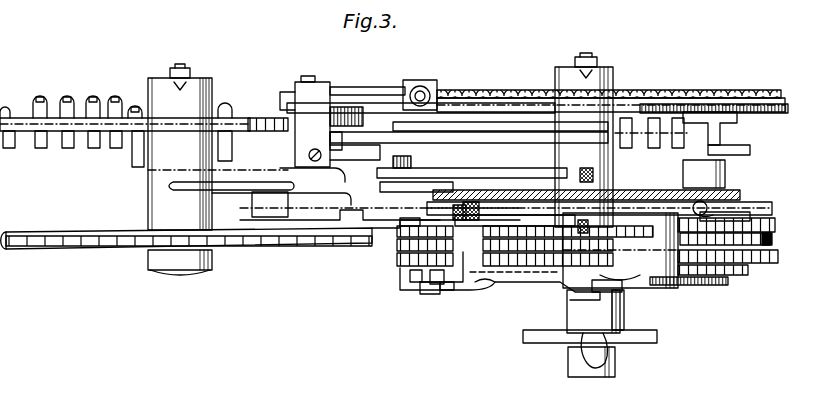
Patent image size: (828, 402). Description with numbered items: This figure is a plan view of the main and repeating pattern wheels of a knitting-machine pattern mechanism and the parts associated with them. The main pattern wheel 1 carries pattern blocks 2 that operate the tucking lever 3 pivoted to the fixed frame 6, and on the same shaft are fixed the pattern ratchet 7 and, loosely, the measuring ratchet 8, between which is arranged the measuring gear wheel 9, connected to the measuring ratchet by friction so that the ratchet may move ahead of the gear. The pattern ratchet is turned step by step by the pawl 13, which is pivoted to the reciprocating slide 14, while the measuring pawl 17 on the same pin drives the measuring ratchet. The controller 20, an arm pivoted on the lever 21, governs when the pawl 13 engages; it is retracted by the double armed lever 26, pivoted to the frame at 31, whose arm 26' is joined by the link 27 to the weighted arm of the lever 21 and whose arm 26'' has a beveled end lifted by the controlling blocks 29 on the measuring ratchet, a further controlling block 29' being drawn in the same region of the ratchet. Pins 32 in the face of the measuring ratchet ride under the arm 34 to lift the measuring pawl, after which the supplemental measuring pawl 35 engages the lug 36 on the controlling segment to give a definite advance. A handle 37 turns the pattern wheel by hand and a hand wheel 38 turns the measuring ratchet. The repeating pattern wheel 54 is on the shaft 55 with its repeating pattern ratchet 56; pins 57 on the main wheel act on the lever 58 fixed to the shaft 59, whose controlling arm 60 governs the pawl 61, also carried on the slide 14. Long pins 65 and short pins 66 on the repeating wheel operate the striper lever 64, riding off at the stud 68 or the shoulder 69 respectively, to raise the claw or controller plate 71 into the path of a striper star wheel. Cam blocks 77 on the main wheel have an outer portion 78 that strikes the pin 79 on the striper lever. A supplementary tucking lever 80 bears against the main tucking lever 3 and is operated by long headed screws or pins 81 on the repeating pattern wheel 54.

The pattern wheel 1 is at (660, 98).
The pattern blocks 2 is at (704, 98).
The lever 3 is at (503, 132).
The fixed frame 6 is at (742, 193).
The pattern ratchet 7 is at (758, 222).
The measuring ratchet 8 is at (768, 262).
The measuring gear wheel 9 is at (733, 237).
The pawl 13 is at (636, 224).
The slide 14 is at (362, 232).
The measuring pawl 17 is at (648, 272).
The shiftable controller 20 is at (712, 214).
The lever 21 is at (678, 210).
The double armed lever 26 is at (533, 278).
The arm 26' is at (481, 185).
The arm 26'' is at (478, 305).
The link 27 is at (524, 222).
The controlling blocks 29 is at (394, 314).
The lever 29' is at (624, 305).
The pivot 31 is at (398, 248).
The pins 32 is at (410, 278).
The arm 34 is at (550, 280).
The supplemental measuring pawl 35 is at (572, 300).
The lug 36 is at (446, 290).
The handle 37 is at (593, 378).
The hand wheel 38 is at (552, 336).
The repeating pattern wheel 54 is at (80, 118).
The shaft 55 is at (184, 275).
The repeating pattern ratchet 56 is at (93, 250).
The pins 57 is at (662, 132).
The lever 58 is at (498, 124).
The shaft 59 is at (300, 180).
The controlling arm 60 is at (251, 222).
The pawl 61 is at (290, 226).
The striper lever 64 is at (426, 182).
The long pins 65 is at (136, 164).
The short pins 66 is at (93, 150).
The stud 68 is at (330, 140).
The shoulder 69 is at (342, 106).
The claw or controller plate 71 is at (372, 392).
The cam blocks 77 is at (740, 119).
The outer arm or portion 78 is at (752, 150).
The pin 79 is at (588, 166).
The supplementary tucking lever 80 is at (383, 88).
The long headed screws or pins 81 is at (41, 102).